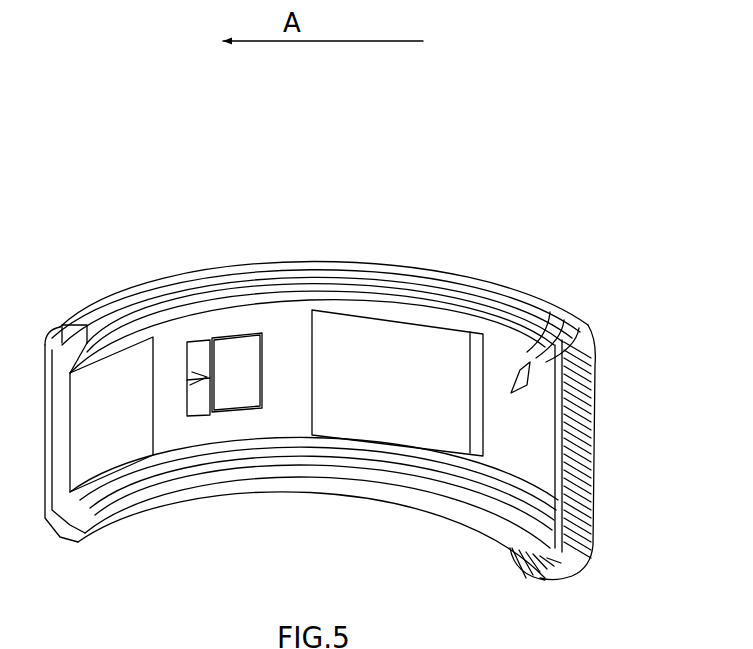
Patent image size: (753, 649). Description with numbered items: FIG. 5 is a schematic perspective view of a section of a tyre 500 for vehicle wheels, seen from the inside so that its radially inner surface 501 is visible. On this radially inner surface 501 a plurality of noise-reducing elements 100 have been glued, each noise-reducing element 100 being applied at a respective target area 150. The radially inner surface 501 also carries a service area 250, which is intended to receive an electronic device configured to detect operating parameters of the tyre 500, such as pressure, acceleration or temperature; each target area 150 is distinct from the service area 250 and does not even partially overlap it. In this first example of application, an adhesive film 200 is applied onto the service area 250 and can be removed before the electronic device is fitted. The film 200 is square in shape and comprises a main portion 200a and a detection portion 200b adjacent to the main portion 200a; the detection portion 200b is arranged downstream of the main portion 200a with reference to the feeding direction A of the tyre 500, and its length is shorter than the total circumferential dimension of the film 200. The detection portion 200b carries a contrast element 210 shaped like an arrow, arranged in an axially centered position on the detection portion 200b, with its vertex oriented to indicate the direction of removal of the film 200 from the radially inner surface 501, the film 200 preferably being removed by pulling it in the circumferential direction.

The noise-reducing element 100 is at (103, 400).
The target area 150 is at (158, 330).
The adhesive film 200 is at (243, 383).
The main portion 200a is at (227, 378).
The detection portion 200b is at (200, 400).
The contrast element 210 is at (199, 374).
The service area 250 is at (252, 323).
The tyre 500 is at (547, 263).
The radially inner surface 501 is at (518, 434).